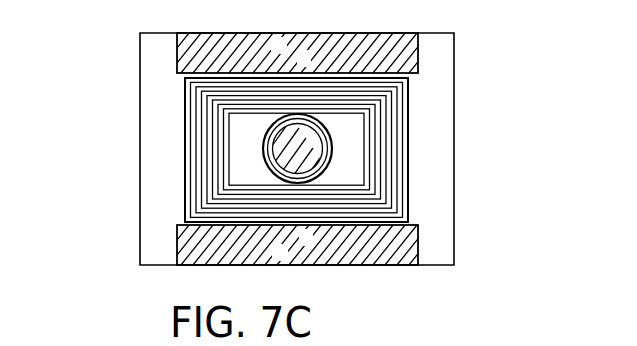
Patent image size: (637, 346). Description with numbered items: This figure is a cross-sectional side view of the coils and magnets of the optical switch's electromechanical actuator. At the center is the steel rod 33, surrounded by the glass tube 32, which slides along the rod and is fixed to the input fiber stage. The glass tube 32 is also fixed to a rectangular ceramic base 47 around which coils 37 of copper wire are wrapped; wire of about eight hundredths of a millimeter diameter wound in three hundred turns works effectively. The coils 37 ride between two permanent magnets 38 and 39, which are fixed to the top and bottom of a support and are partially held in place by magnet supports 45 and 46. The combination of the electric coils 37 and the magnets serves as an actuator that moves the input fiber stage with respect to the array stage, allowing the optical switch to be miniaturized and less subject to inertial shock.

The glass tube 32 is at (332, 172).
The steel rod 33 is at (298, 145).
The coils 37 is at (212, 144).
The permanent magnet 38 is at (407, 50).
The permanent magnet 39 is at (365, 250).
The magnet support 45 is at (158, 187).
The magnet support 46 is at (425, 199).
The rectangular ceramic base 47 is at (245, 127).